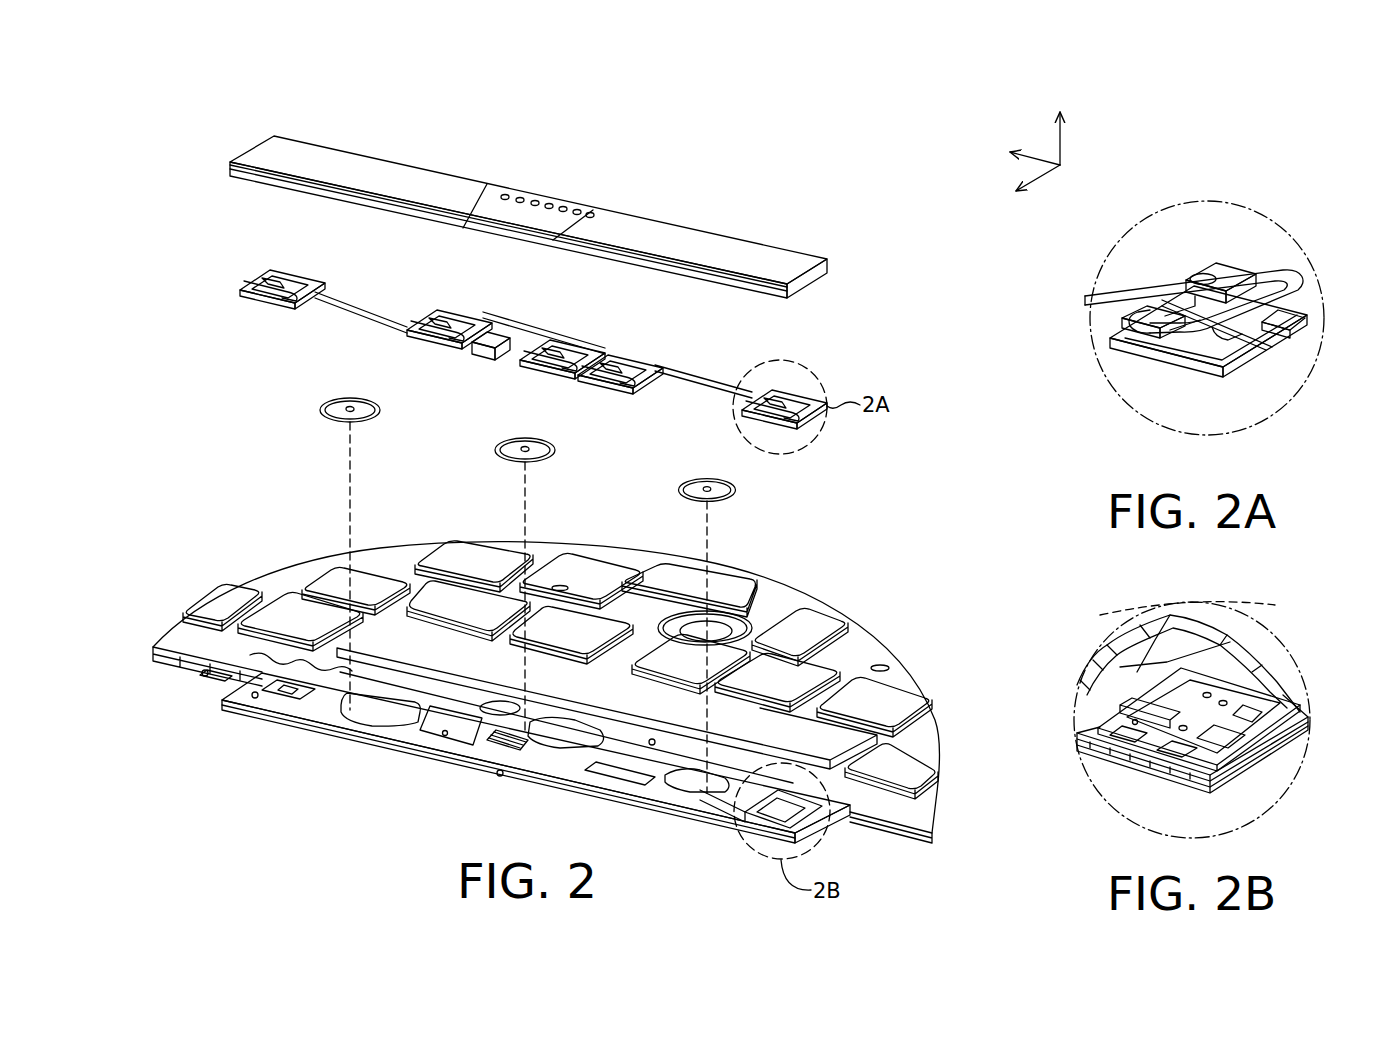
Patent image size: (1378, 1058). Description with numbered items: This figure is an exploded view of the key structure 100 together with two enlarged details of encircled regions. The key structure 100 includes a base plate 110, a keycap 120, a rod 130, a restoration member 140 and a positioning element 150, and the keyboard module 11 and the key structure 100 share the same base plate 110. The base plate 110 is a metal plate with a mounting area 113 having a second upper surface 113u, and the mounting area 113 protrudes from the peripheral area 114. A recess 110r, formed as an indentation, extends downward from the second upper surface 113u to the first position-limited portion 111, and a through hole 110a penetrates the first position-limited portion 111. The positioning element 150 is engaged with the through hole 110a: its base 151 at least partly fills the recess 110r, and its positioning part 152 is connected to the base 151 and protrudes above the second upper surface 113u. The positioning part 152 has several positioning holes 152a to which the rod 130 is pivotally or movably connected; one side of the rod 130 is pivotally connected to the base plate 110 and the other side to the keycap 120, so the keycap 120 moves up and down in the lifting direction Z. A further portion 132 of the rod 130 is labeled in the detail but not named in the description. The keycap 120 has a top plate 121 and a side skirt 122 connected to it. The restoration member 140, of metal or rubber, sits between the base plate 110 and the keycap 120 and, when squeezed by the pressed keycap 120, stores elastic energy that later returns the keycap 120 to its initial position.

In FIG. 2, the key structure 100 is at (878, 147).
In FIG. 2, the keyboard module 11 is at (779, 630).
In FIG. 2, the base plate 110 is at (883, 808).
In FIG. 2B, the base plate 110 is at (1240, 628).
In FIG. 2B, the through hole 110a is at (1307, 733).
In FIG. 2B, the recess 110r is at (1097, 668).
In FIG. 2B, the first position-limited portion 111 is at (1190, 690).
In FIG. 2B, the mounting area 113 is at (1270, 688).
In FIG. 2B, the second upper surface 113u is at (1207, 712).
In FIG. 2B, the peripheral area 114 is at (1290, 677).
In FIG. 2, the keycap 120 is at (916, 204).
In FIG. 2, the top plate 121 is at (748, 262).
In FIG. 2, the side skirt 122 is at (828, 276).
In FIG. 2, the rod 130 is at (683, 380).
In FIG. 2A, the rod 130 is at (1262, 273).
In FIG. 2A, the extending portion 132 is at (1094, 298).
In FIG. 2, the restoration member 140 is at (320, 410).
In FIG. 2A, the positioning element 150 is at (1144, 443).
In FIG. 2A, the base 151 is at (1170, 354).
In FIG. 2A, the positioning part 152 is at (1135, 322).
In FIG. 2A, the positioning holes 152a is at (1243, 274).